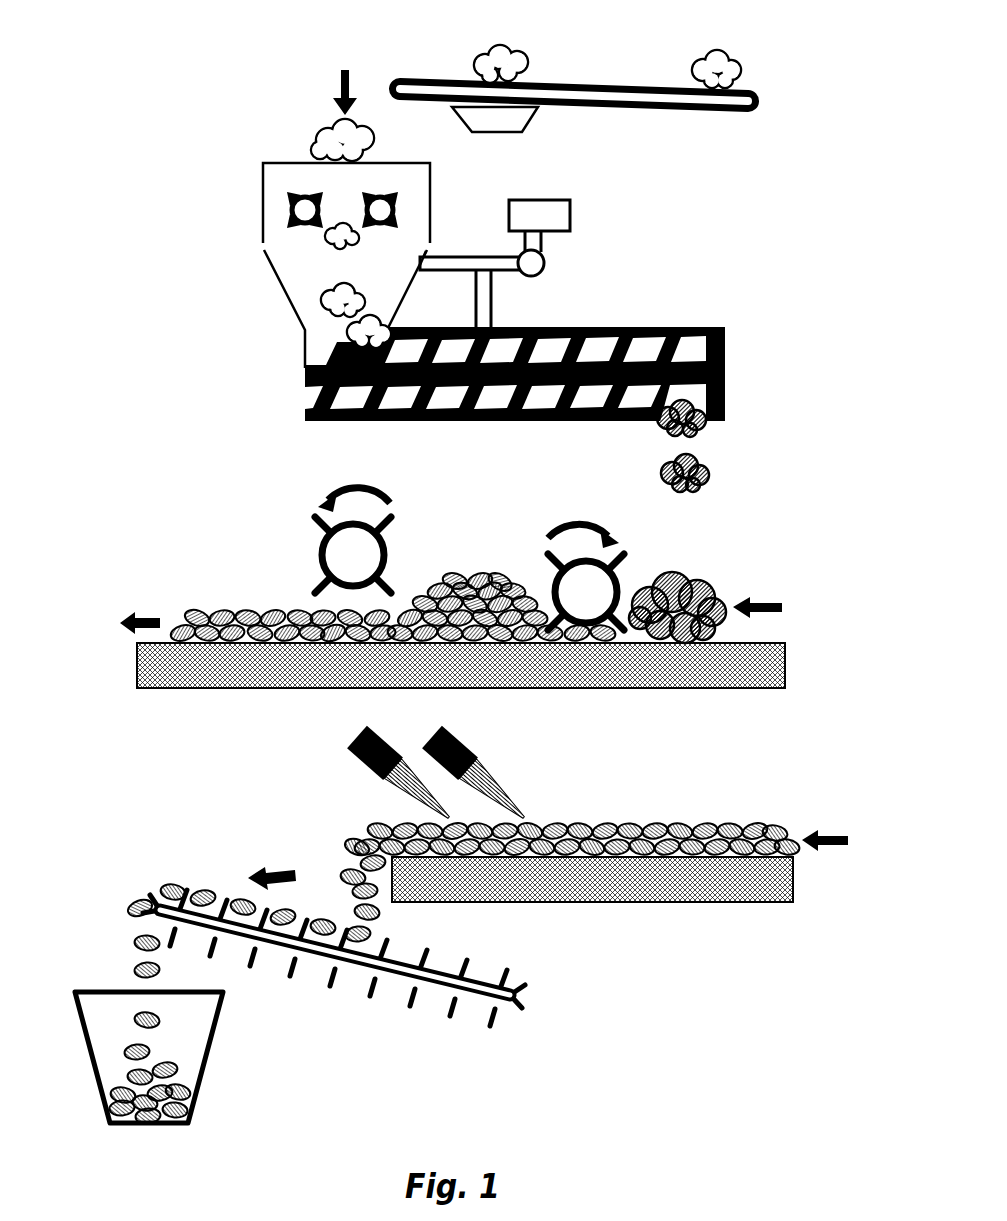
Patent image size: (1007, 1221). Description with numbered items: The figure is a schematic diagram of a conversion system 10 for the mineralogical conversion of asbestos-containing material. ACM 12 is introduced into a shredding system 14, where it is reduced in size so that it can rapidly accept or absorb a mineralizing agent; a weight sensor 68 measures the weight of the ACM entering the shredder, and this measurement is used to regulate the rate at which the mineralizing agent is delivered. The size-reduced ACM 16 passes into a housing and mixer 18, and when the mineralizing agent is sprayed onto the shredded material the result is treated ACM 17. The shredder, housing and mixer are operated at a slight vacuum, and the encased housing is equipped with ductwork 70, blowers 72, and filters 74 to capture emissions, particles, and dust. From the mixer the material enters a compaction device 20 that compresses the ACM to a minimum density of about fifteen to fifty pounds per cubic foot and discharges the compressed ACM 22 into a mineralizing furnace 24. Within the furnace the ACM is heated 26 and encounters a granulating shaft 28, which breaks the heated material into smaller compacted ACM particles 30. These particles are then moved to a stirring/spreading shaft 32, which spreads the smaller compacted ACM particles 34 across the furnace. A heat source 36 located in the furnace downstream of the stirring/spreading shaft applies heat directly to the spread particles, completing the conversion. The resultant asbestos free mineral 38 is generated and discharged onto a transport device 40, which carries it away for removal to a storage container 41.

The conversion system 10 is at (116, 106).
The ACM 12 is at (532, 40).
The shredding system 14 is at (257, 195).
The size-reduced ACM 16 is at (318, 257).
The treated ACM 17 is at (320, 305).
The housing and mixer 18 is at (306, 278).
The compaction device 20 is at (298, 386).
The compressed ACM 22 is at (710, 433).
The mineralizing furnace 24 is at (742, 570).
The heated ACM 26 is at (681, 566).
The granulating shaft 28 is at (622, 540).
The compacted ACM particles 30 is at (493, 567).
The stirring/spreading shaft 32 is at (305, 543).
The spread ACM particles 34 is at (181, 597).
The heat source 36 is at (482, 763).
The asbestos free mineral 38 is at (343, 850).
The transport device 40 is at (506, 1018).
The storage container 41 is at (210, 1082).
The weight sensor 68 is at (535, 122).
The ductwork 70 is at (451, 250).
The blowers 72 is at (550, 270).
The filters 74 is at (573, 221).